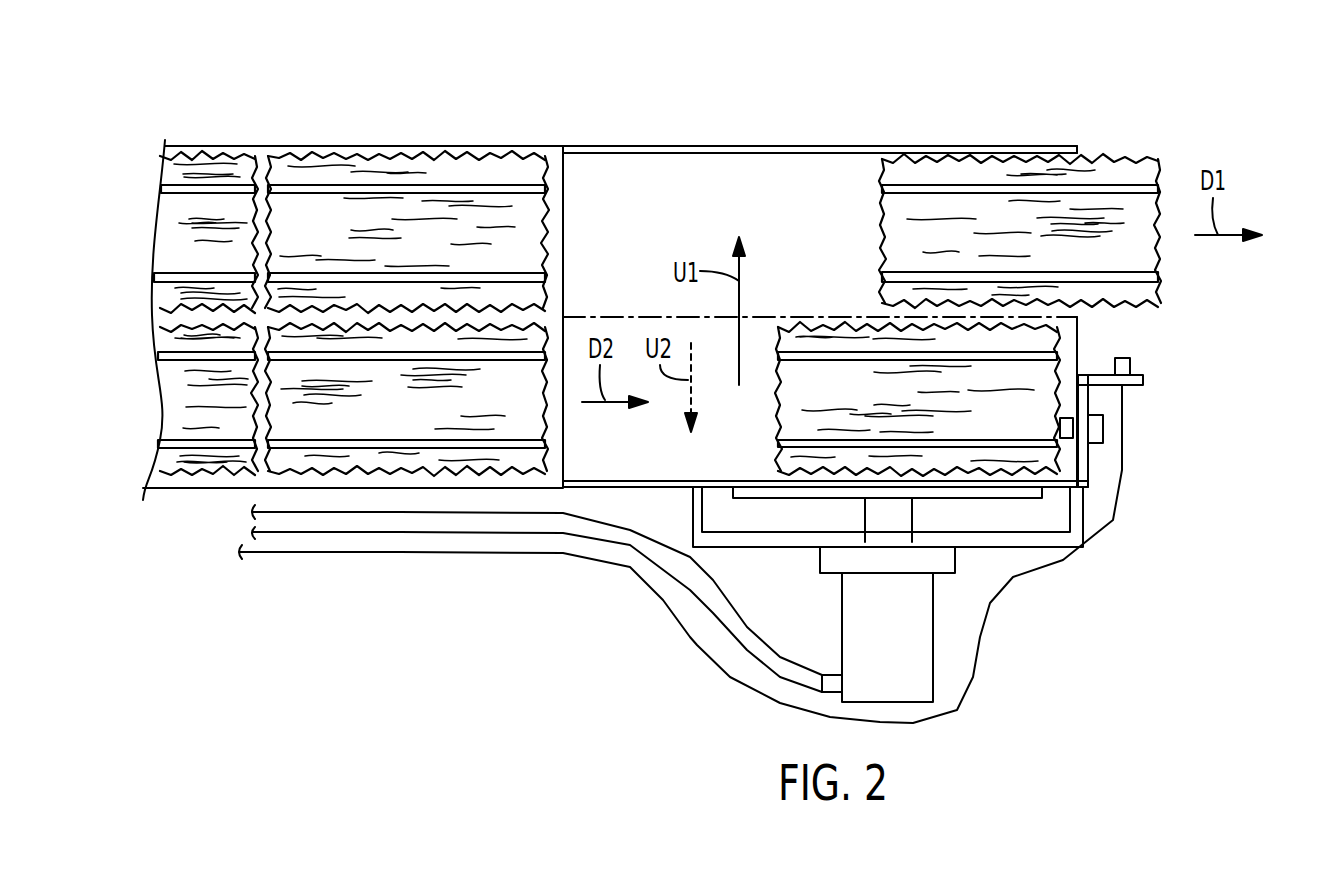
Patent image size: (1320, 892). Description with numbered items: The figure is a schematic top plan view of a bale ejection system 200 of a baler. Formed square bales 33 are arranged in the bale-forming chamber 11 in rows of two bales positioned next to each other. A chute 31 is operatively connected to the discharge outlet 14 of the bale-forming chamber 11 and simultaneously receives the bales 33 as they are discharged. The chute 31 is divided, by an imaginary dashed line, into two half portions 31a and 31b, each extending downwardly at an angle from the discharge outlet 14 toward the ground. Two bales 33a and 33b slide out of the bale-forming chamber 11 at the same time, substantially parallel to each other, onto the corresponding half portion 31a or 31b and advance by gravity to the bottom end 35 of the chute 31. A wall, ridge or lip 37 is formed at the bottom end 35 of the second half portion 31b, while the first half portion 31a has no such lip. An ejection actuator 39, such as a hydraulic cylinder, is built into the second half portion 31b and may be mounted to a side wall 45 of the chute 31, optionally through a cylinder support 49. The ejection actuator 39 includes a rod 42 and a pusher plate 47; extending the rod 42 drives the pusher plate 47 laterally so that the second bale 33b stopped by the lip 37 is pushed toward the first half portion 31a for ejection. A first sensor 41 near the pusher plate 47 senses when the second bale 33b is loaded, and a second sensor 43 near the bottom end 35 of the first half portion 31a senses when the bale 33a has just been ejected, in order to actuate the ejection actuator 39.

The bale ejection system 200 is at (1188, 104).
The bale-forming chamber 11 is at (267, 145).
The discharge outlet 14 is at (556, 160).
The chute 31 is at (607, 170).
The first half portion 31a is at (770, 168).
The second half portion 31b is at (597, 463).
The square bales 33 is at (175, 405).
The first bale 33a is at (1095, 170).
The second bale 33b is at (805, 325).
The bottom end 35 is at (1082, 465).
The lip 37 is at (1073, 428).
The ejection actuator 39 is at (900, 690).
The first sensor 41 is at (1103, 425).
The rod 42 is at (905, 514).
The second sensor 43 is at (1130, 362).
The side wall 45 is at (672, 487).
The pusher plate 47 is at (808, 493).
The cylinder support 49 is at (1043, 550).